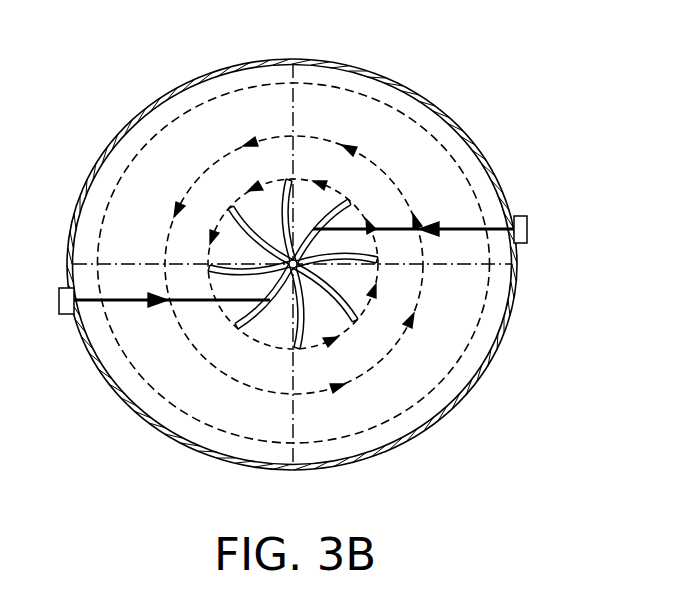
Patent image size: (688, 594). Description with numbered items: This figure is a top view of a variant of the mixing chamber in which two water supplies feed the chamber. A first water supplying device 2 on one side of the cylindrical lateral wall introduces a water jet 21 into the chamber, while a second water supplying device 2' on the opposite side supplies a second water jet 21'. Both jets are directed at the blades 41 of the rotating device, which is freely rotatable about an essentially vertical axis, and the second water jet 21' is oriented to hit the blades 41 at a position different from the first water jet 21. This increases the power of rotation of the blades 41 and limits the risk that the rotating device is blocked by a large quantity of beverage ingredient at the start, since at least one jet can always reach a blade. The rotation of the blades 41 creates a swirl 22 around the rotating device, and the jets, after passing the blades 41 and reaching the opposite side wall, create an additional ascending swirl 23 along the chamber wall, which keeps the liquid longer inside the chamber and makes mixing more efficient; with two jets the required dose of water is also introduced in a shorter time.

The water supplying device 2 is at (37, 292).
The second water supplying device 2' is at (553, 221).
The water jet 21 is at (167, 357).
The second water jet 21' is at (419, 186).
The swirl 22 is at (321, 137).
The additional swirl 23 is at (456, 366).
The blades 41 is at (340, 197).